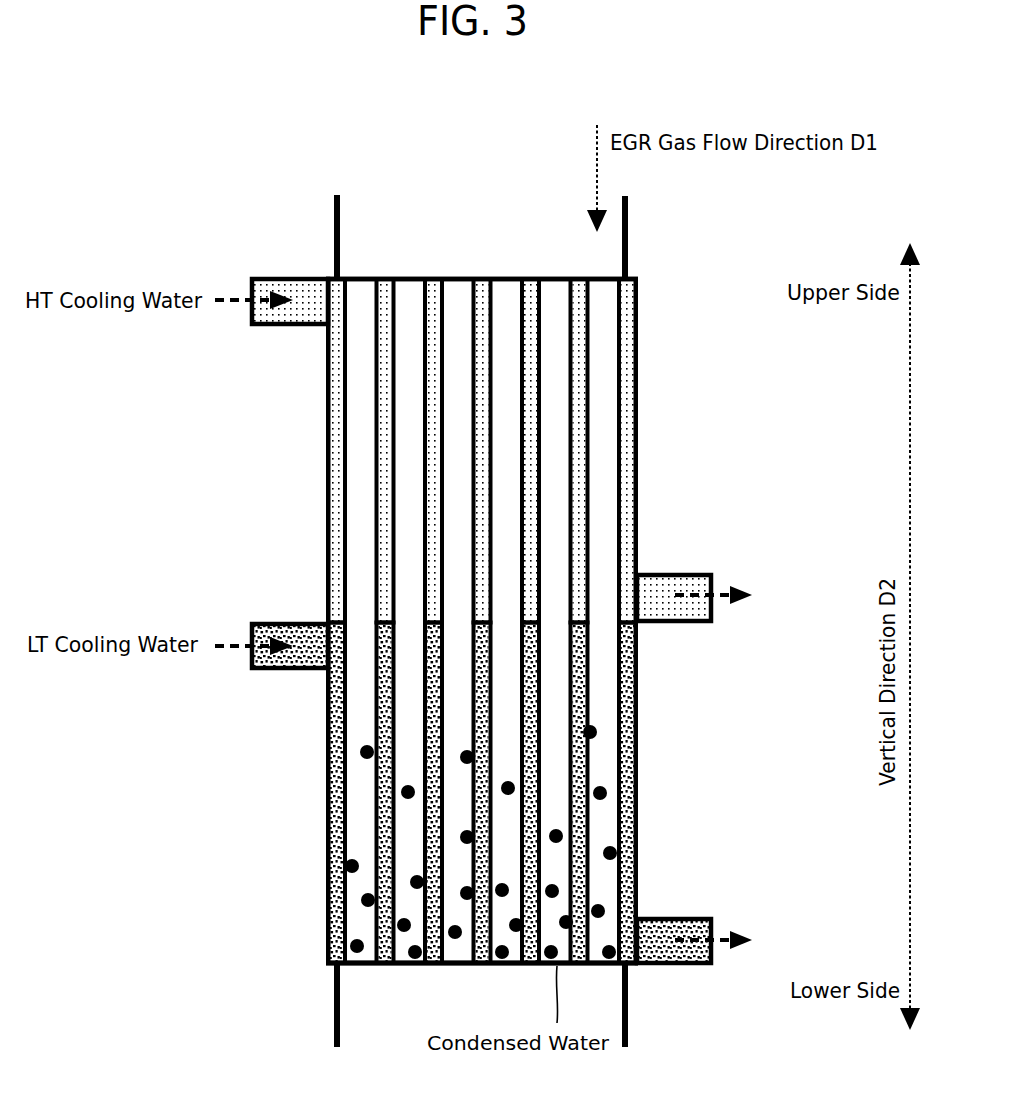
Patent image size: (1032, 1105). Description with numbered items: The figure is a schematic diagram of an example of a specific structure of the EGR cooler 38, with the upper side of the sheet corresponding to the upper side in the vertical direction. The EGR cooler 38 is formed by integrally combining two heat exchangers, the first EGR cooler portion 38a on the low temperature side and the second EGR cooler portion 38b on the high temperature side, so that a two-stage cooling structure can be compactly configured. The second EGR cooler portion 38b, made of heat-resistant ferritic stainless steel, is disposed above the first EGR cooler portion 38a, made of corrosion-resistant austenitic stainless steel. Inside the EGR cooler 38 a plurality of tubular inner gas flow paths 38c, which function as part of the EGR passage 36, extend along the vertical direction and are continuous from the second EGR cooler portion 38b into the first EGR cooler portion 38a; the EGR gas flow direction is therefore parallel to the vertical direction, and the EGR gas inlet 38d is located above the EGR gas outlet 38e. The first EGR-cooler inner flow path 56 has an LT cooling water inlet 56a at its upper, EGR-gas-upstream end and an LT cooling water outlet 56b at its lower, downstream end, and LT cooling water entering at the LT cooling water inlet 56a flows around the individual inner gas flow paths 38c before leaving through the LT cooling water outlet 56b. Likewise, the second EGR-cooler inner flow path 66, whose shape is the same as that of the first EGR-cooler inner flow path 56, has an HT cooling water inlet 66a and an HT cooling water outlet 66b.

The EGR passage 36 is at (628, 229).
The EGR cooler 38 is at (835, 428).
The first EGR cooler portion 38a is at (660, 707).
The second EGR cooler portion 38b is at (660, 515).
The inner gas flow paths 38c is at (603, 288).
The EGR gas inlet 38d is at (608, 279).
The EGR gas outlet 38e is at (612, 966).
The first EGR-cooler inner flow path 56 is at (324, 822).
The LT cooling water inlet 56a is at (290, 621).
The LT cooling water outlet 56b is at (681, 917).
The second EGR-cooler inner flow path 66 is at (324, 448).
The HT cooling water inlet 66a is at (287, 277).
The HT cooling water outlet 66b is at (681, 573).